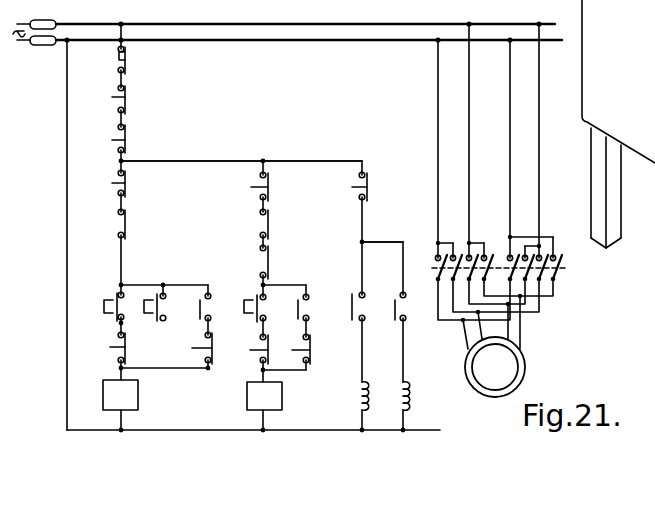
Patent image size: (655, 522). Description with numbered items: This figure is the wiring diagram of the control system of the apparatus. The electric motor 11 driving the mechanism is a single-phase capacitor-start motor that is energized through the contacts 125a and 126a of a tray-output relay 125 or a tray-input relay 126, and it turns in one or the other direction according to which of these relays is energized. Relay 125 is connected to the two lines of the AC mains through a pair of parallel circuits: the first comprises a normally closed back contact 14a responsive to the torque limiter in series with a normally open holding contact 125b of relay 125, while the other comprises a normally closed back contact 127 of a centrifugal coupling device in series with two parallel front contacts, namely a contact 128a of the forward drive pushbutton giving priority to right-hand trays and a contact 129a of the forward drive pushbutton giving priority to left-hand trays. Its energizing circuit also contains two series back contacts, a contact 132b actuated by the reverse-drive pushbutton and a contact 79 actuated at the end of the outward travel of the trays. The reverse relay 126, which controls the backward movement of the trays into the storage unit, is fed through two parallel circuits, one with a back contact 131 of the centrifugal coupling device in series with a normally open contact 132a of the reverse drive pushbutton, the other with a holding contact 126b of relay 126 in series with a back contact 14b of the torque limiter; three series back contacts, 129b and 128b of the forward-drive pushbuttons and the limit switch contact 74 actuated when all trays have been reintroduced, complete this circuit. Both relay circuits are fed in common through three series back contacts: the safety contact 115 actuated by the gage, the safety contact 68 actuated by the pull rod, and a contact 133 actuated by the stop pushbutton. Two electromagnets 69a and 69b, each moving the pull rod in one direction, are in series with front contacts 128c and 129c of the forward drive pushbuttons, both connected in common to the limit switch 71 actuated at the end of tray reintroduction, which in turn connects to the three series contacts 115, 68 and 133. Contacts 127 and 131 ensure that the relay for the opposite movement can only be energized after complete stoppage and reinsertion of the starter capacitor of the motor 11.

The stop pushbutton contact 133 is at (125, 60).
The safety contact 68 is at (128, 102).
The safety contact 115 is at (146, 136).
The limit contact 79 is at (129, 183).
The limit switch contact 74 is at (270, 162).
The limit switch 71 is at (370, 186).
The reverse-drive pushbutton back contact 132b is at (118, 237).
The forward-drive pushbutton back contact 128b is at (270, 187).
The forward-drive pushbutton back contact 129b is at (269, 229).
The holding contact 126b is at (269, 277).
The holding contact 125b is at (196, 302).
The forward-drive pushbutton front contact 129a is at (179, 270).
The forward-drive pushbutton front contact 128a is at (108, 301).
The relay contact 125a is at (418, 248).
The forward-drive pushbutton front contact 128c is at (355, 312).
The centrifugal coupling back contact 127 is at (96, 348).
The torque limiter back contact 14a is at (181, 348).
The torque limiter back contact 14b is at (323, 330).
The reverse-drive pushbutton contact 132a is at (258, 318).
The forward-drive pushbutton front contact 129c is at (394, 320).
The tray-output relay 125 is at (104, 395).
The tray-input relay 126 is at (247, 395).
The centrifugal coupling back contact 131 is at (272, 350).
The electromagnet 69a is at (358, 390).
The electromagnet 69b is at (406, 390).
The relay contact 126a is at (565, 271).
The electric motor 11 is at (512, 371).